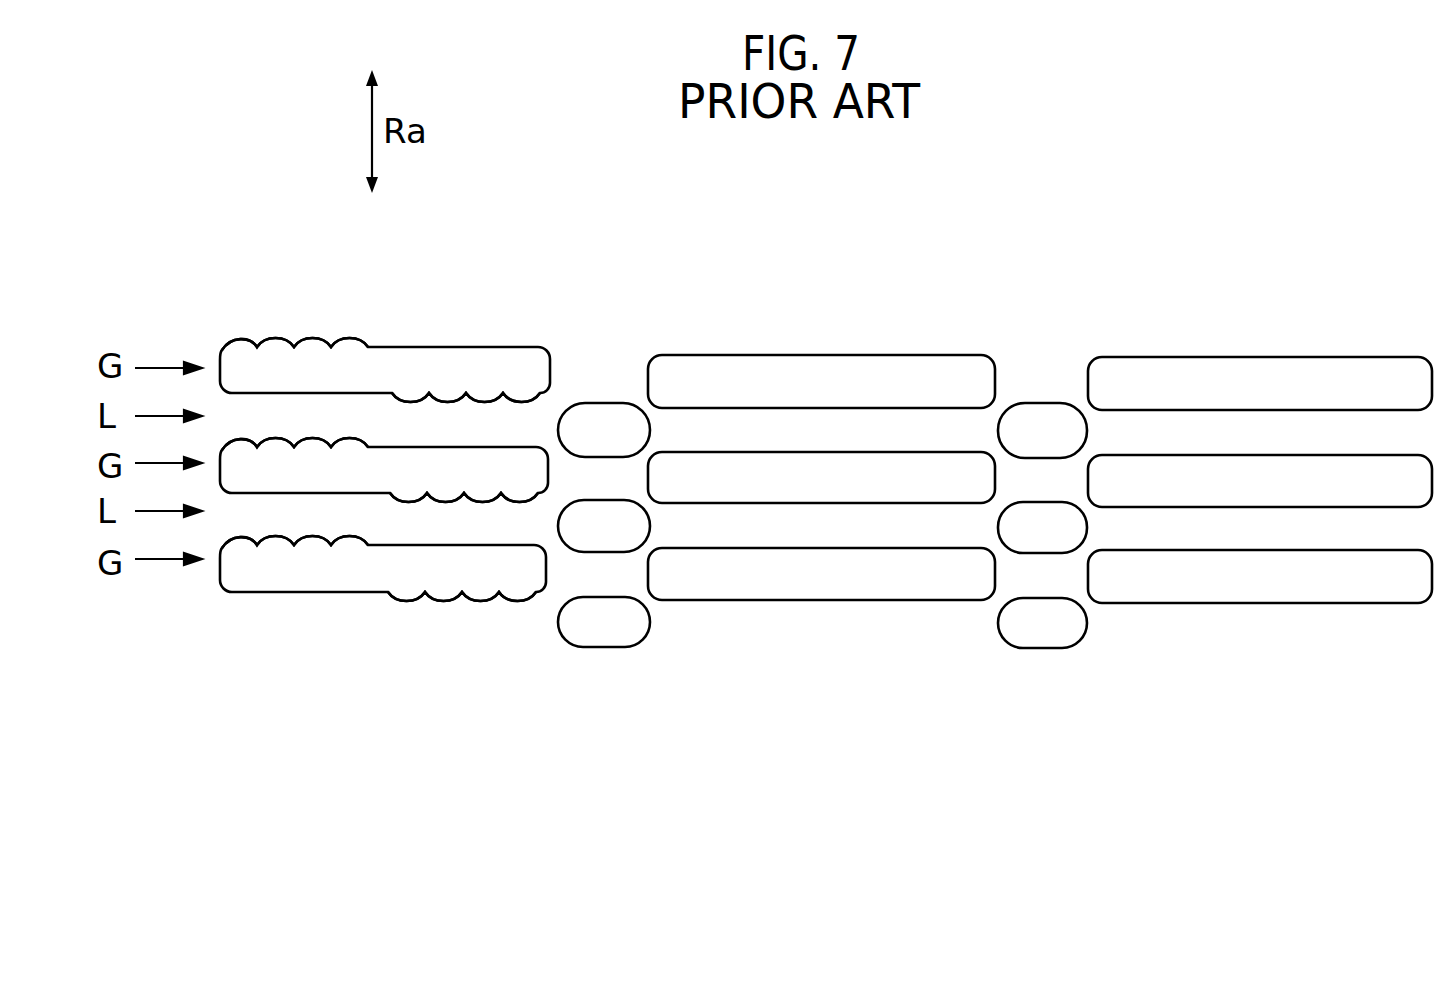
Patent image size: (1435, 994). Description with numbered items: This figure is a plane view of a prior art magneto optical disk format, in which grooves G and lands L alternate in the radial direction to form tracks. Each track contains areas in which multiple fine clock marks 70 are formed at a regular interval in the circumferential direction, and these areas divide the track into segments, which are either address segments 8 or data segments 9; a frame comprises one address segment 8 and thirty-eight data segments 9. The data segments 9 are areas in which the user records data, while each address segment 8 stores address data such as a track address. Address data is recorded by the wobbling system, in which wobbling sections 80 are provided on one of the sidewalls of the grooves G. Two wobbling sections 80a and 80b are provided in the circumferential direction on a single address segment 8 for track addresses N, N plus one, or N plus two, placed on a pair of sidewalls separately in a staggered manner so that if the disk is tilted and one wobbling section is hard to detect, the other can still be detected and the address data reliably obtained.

The address segment 8 is at (436, 360).
The wobbling section 80 is at (386, 435).
The wobbling section 80a is at (316, 343).
The wobbling section 80b is at (441, 402).
The clock mark 70 is at (605, 515).
The data segment 9 is at (847, 467).